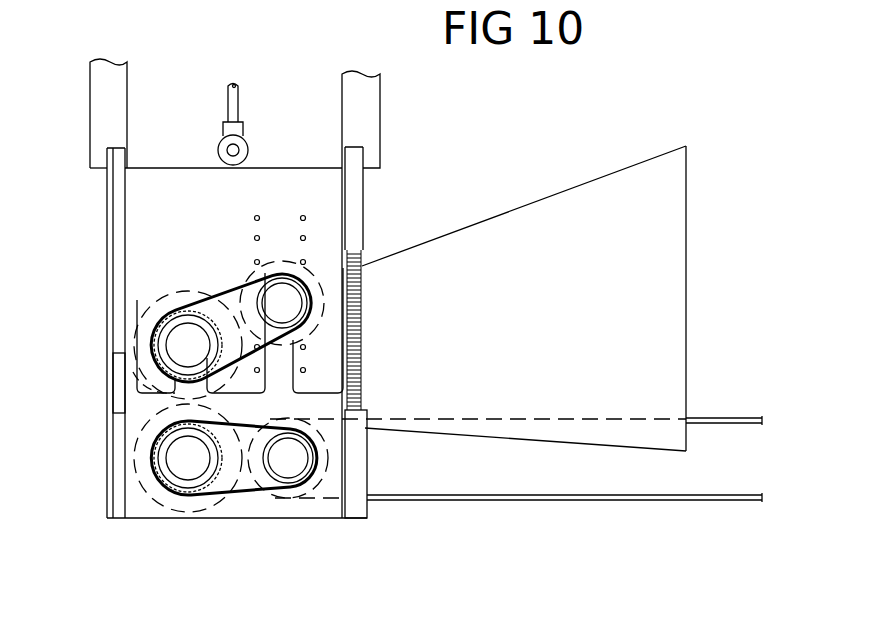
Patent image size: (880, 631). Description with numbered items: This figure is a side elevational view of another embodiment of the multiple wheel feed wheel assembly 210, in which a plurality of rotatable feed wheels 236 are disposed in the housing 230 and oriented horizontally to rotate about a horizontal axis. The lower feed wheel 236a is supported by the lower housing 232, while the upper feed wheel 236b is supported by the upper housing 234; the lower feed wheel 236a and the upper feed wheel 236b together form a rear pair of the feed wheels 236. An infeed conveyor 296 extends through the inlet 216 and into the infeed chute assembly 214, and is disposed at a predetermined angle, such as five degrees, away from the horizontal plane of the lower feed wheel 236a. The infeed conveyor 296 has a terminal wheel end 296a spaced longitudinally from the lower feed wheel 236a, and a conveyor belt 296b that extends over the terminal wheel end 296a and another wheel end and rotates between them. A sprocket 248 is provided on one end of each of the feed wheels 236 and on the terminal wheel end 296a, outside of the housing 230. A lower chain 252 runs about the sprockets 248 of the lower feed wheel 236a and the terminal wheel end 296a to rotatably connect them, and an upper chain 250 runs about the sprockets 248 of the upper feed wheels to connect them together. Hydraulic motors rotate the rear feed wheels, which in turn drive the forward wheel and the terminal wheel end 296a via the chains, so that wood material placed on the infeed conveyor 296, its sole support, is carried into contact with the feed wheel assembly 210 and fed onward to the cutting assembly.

The multiple wheel feed wheel assembly 210 is at (563, 112).
The infeed chute assembly 214 is at (628, 163).
The inlet 216 is at (686, 277).
The housing 230 is at (295, 157).
The lower housing 232 is at (142, 513).
The upper housing 234 is at (157, 180).
The feed wheels 236 is at (122, 318).
The lower feed wheel 236a is at (130, 458).
The upper feed wheel 236b is at (133, 377).
The sprocket 248 is at (168, 314).
The upper chain 250 is at (196, 305).
The lower chain 252 is at (243, 500).
The infeed conveyor 296 is at (742, 418).
The terminal wheel end 296a is at (300, 497).
The conveyor belt 296b is at (710, 420).